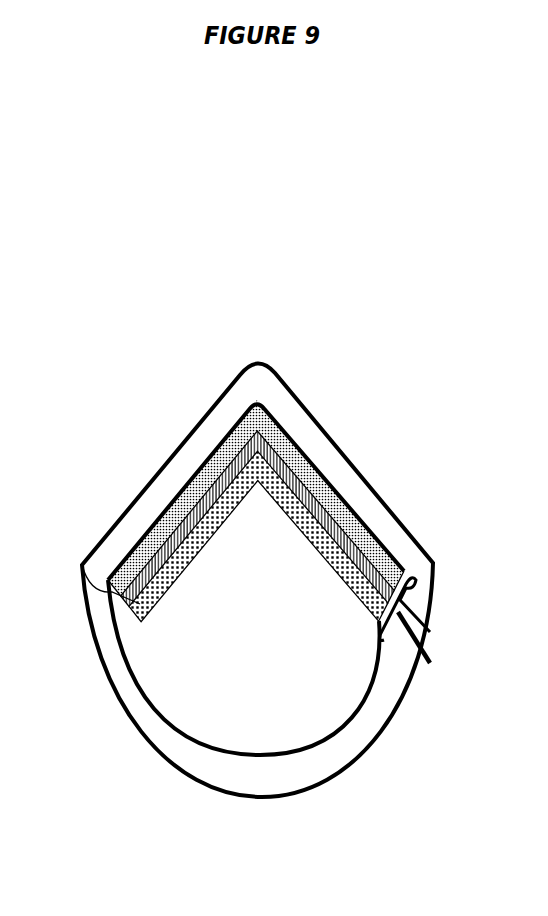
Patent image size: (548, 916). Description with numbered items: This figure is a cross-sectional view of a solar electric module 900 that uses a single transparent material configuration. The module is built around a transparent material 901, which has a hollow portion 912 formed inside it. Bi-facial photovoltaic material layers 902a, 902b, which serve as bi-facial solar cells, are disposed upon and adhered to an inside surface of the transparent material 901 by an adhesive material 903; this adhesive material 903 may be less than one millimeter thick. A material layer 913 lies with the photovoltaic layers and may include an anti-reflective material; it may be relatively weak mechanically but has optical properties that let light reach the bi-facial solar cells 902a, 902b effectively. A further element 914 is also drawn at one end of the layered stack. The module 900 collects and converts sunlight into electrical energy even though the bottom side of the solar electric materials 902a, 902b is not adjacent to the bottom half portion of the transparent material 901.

The solar electric module 900 is at (80, 330).
The transparent material 901 is at (190, 780).
The bi-facial photovoltaic material layer 902a is at (130, 597).
The bi-facial photovoltaic material layer 902b is at (350, 507).
The adhesive material 903 is at (82, 565).
The hollow portion 912 is at (273, 647).
The material layer 913 is at (133, 607).
The stitching thread 914 is at (415, 638).